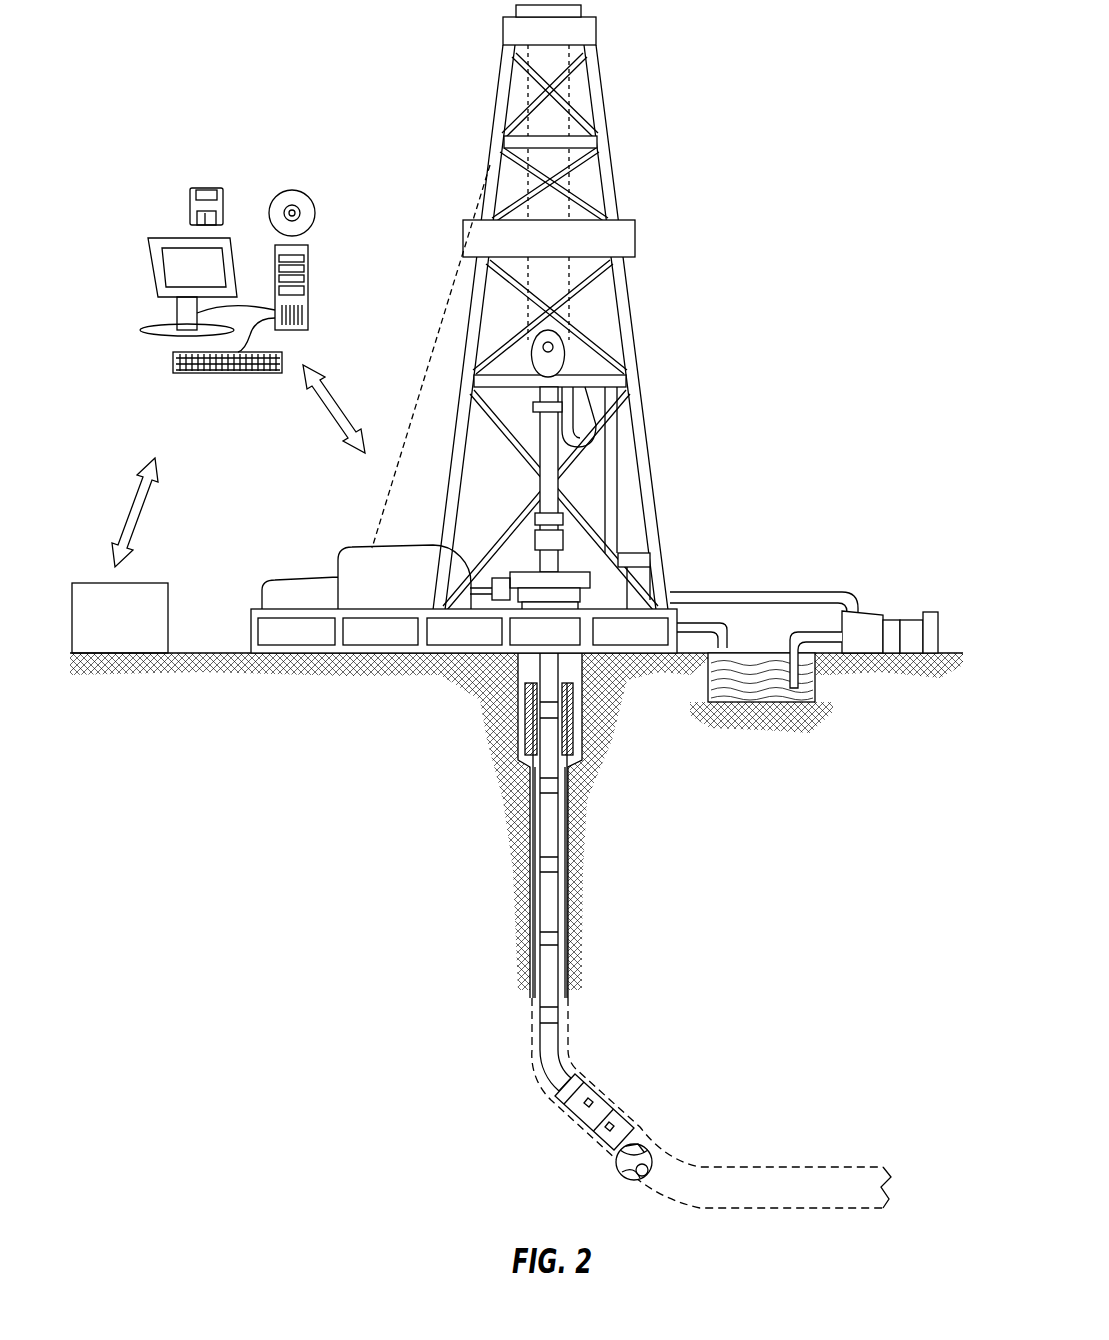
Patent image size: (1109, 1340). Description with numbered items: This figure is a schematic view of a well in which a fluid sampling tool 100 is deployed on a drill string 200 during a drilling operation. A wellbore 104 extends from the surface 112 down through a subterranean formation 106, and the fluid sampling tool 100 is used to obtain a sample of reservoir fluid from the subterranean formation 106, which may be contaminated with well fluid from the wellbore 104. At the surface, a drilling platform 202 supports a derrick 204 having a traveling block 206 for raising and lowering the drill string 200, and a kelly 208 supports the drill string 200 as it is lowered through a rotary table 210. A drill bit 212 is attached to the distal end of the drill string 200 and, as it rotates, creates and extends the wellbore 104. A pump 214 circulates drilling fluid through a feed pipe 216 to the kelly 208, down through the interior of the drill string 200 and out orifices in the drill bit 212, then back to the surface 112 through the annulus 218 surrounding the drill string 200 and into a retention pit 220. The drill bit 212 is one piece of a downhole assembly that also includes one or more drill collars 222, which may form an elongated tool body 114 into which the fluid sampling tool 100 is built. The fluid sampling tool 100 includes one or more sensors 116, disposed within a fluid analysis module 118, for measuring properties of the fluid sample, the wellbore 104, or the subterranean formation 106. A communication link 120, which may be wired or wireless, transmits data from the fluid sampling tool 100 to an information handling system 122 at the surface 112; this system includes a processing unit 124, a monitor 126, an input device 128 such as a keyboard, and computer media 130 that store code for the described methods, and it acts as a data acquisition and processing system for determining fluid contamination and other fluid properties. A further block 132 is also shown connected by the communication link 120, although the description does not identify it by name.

The fluid sampling tool 100 is at (600, 1113).
The wellbore 104 is at (568, 857).
The subterranean formation 106 is at (797, 948).
The surface 112 is at (948, 653).
The tool body 114 is at (593, 1110).
The sensors 116 is at (605, 1150).
The fluid analysis module 118 is at (583, 1116).
The communication link 120 is at (323, 415).
The information handling system 122 is at (156, 178).
The processing unit 124 is at (308, 258).
The monitor 126 is at (155, 275).
The input device 128 is at (183, 373).
The computer media 130 is at (290, 190).
The remote data center 132 is at (140, 632).
The drill string 200 is at (558, 840).
The drilling platform 202 is at (251, 635).
The derrick 204 is at (609, 158).
The traveling block 206 is at (571, 348).
The kelly 208 is at (550, 433).
The rotary table 210 is at (585, 570).
The drill bit 212 is at (648, 1150).
The pump 214 is at (870, 612).
The feed pipe 216 is at (787, 592).
The annulus 218 is at (530, 858).
The retention pit 220 is at (760, 687).
The drill collars 222 is at (598, 1125).